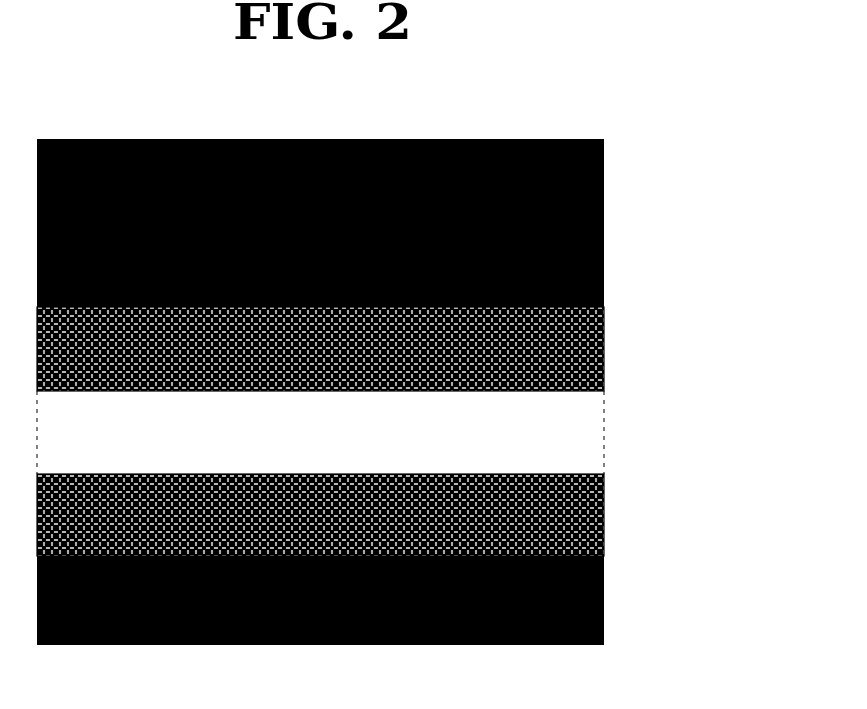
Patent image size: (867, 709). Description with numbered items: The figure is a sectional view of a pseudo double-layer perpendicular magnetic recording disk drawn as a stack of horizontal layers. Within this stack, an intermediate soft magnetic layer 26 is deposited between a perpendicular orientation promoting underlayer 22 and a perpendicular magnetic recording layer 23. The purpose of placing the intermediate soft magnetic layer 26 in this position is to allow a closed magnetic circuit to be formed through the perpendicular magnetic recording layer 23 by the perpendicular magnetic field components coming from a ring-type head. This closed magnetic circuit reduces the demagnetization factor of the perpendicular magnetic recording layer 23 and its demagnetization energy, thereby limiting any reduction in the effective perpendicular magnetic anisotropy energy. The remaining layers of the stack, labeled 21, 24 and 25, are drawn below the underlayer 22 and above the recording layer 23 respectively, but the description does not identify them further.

The first electrode layer 21 is at (604, 609).
The perpendicular orientation promoting underlayer 22 is at (604, 518).
The perpendicular magnetic recording layer 23 is at (604, 350).
The second electrode layer 24 is at (604, 265).
The pressure sensitive adhesive layer 25 is at (604, 183).
The intermediate soft magnetic layer 26 is at (588, 433).